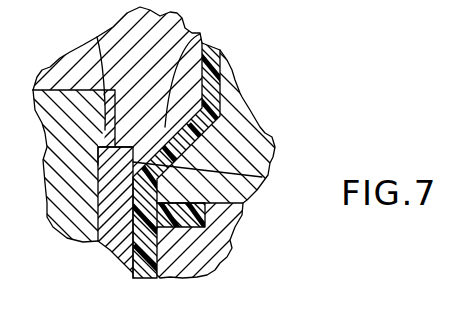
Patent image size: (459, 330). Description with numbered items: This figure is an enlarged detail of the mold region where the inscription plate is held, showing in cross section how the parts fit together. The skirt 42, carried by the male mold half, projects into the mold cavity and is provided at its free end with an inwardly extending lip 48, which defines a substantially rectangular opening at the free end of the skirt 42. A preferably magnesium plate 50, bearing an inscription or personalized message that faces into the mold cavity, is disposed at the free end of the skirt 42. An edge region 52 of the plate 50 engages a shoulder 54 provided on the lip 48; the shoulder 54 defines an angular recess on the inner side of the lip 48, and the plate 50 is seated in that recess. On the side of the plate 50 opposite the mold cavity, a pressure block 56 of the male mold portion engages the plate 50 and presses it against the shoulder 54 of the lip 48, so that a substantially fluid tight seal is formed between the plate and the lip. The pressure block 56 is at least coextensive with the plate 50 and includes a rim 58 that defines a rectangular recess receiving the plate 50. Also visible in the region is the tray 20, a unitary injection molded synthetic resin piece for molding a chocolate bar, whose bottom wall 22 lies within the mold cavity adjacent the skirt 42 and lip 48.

The tray 20 is at (226, 108).
The bottom wall 22 is at (148, 280).
The skirt 42 is at (57, 72).
The lip 48 is at (175, 63).
The plate 50 is at (99, 242).
The edge region 52 is at (98, 151).
The shoulder 54 is at (262, 177).
The pressure block 56 is at (72, 222).
The rim 58 is at (90, 43).